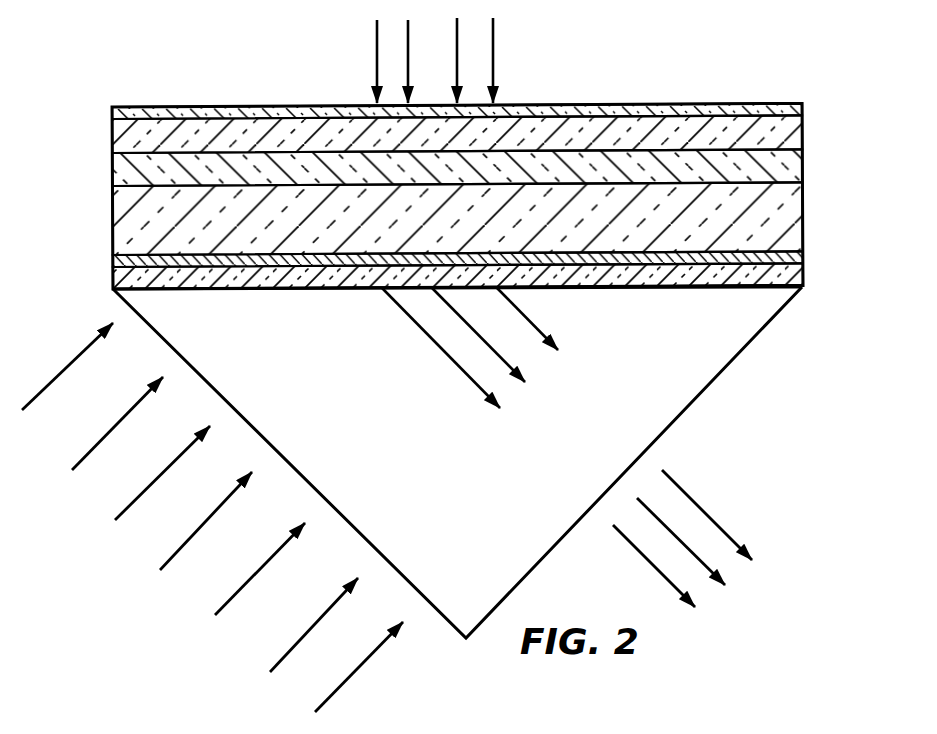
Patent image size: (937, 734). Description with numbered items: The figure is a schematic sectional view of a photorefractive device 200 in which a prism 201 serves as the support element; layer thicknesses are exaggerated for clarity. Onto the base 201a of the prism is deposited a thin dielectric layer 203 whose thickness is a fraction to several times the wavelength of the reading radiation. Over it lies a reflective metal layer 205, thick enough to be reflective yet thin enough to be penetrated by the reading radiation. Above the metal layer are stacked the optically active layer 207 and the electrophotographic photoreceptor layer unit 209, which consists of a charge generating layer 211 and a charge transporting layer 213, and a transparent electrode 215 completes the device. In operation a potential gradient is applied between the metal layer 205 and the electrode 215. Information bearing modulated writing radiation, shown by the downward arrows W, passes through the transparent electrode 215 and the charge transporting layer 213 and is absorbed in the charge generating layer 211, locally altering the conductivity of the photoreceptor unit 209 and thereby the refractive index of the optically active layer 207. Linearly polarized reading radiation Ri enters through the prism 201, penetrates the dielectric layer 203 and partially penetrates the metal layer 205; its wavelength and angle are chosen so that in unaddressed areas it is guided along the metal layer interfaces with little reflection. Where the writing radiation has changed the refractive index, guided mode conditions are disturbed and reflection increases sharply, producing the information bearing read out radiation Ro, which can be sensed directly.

The device 200 is at (636, 61).
The prism 201 is at (742, 350).
The base of the prism 201a is at (656, 290).
The thin dielectric layer 203 is at (803, 283).
The reflective metal layer 205 is at (803, 260).
The optically active layer 207 is at (803, 213).
The electrophotographic photoreceptor layer unit 209 is at (454, 152).
The charge generating layer 211 is at (112, 168).
The charge transporting layer 213 is at (112, 133).
The transparent electrode 215 is at (718, 104).
The writing radiation W is at (493, 68).
The input reading electromagnetic radiation Ri is at (350, 677).
The read out radiation Ro is at (704, 512).